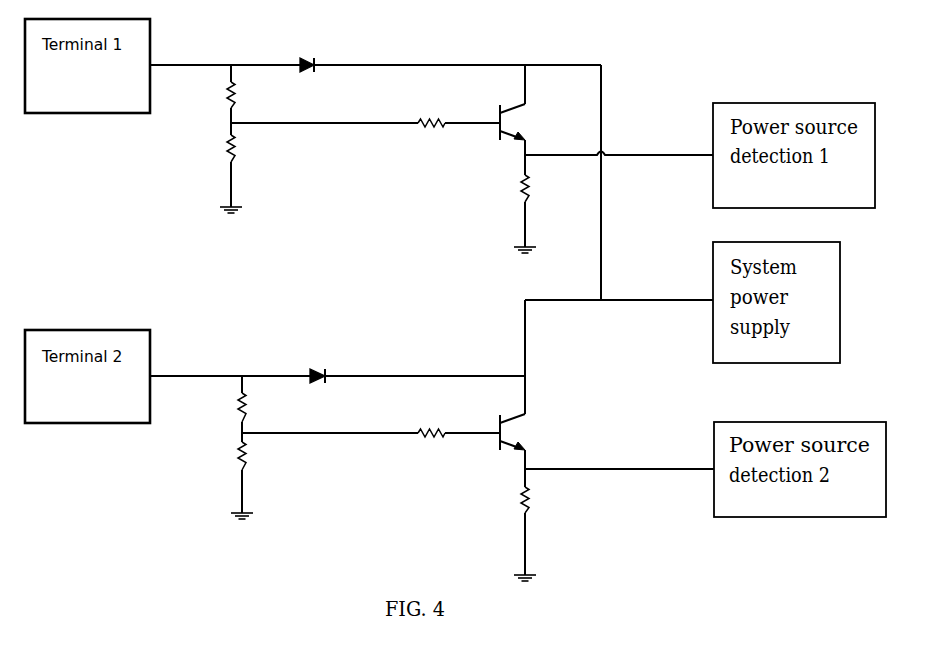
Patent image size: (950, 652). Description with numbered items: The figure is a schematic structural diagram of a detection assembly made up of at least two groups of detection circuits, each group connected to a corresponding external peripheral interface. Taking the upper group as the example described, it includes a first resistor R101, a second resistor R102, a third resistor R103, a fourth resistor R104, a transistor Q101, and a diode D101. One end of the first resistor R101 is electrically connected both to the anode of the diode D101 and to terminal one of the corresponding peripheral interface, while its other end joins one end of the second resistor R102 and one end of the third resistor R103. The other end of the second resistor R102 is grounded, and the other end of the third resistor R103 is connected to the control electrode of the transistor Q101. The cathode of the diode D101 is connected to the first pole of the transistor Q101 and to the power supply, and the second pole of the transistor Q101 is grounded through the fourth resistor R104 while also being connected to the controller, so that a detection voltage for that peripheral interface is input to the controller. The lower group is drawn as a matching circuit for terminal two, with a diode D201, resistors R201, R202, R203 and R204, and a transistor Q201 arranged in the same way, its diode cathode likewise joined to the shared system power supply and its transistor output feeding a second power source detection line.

The diode D101 is at (301, 53).
The first resistor R101 is at (259, 96).
The second resistor R102 is at (259, 149).
The third resistor R103 is at (432, 110).
The transistor Q101 is at (540, 122).
The fourth resistor R104 is at (551, 189).
The diode D201 is at (323, 363).
The resistor R201 is at (275, 408).
The resistor R202 is at (275, 456).
The resistor R203 is at (437, 421).
The transistor Q201 is at (545, 432).
The resistor R204 is at (558, 500).